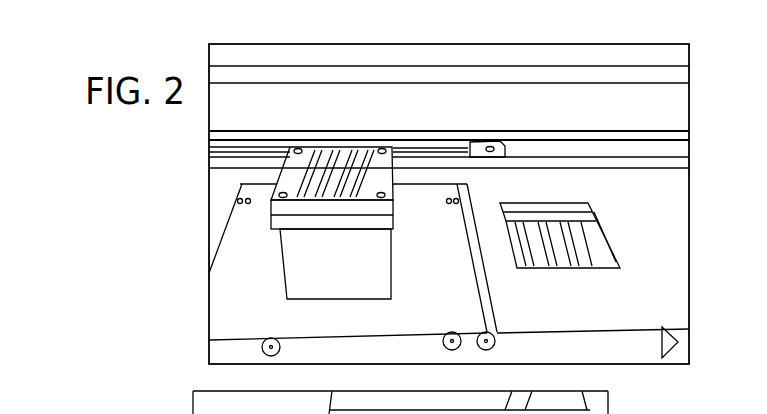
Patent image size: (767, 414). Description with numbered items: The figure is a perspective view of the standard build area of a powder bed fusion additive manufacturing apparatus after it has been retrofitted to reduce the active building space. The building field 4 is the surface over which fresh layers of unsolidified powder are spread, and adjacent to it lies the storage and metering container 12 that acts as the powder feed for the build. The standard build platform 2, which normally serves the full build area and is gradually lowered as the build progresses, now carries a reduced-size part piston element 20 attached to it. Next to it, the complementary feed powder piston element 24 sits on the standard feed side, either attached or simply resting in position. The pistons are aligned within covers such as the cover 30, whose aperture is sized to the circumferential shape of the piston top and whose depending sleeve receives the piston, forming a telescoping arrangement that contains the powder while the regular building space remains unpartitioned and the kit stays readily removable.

The build platform 2 is at (467, 325).
The building field 4 is at (252, 263).
The storage and metering container 12 is at (673, 353).
The part piston element 20 is at (270, 237).
The feed powder piston element 24 is at (595, 236).
The cover 30 is at (667, 278).